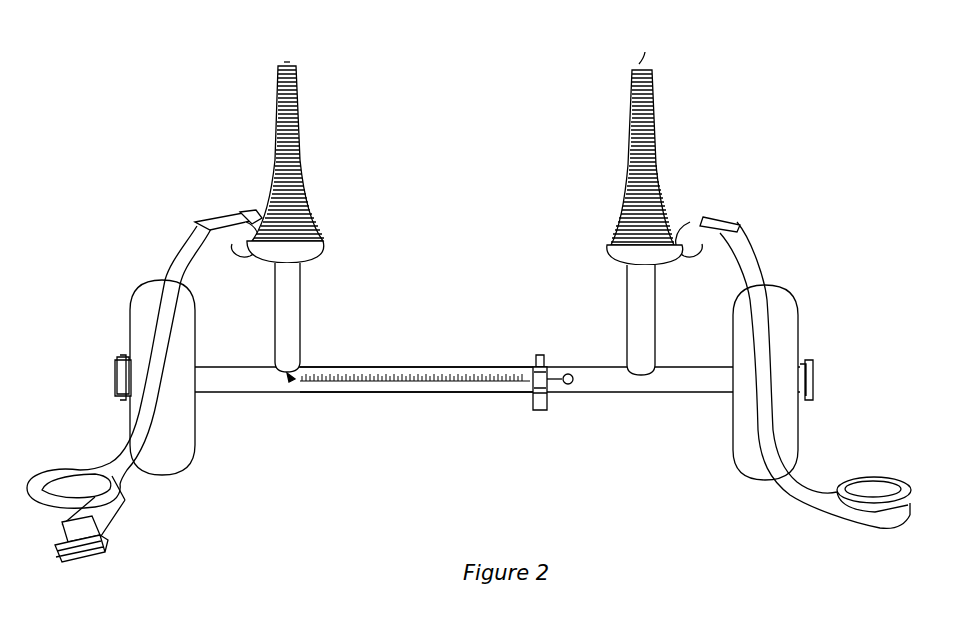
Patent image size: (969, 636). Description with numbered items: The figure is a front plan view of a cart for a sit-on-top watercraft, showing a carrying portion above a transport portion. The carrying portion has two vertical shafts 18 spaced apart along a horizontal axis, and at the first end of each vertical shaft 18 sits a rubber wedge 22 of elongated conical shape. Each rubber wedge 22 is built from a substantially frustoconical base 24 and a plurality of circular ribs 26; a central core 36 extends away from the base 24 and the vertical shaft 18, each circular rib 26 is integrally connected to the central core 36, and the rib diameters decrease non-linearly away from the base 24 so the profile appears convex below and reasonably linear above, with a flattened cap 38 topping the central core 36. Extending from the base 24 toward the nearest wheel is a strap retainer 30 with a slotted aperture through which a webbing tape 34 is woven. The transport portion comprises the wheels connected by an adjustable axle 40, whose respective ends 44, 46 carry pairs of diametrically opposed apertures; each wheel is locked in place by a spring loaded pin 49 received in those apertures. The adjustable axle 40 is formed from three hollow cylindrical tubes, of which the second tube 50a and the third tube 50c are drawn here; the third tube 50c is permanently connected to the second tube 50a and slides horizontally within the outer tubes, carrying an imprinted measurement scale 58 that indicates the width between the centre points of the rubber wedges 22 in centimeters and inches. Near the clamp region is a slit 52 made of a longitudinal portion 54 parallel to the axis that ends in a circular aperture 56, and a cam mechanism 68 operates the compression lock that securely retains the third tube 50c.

The vertical shaft 18 is at (302, 314).
The rubber wedge 22 is at (309, 141).
The base 24 is at (325, 252).
The circular ribs 26 is at (299, 104).
The strap retainer 30 is at (240, 220).
The webbing tape 34 is at (128, 517).
The central core 36 is at (642, 68).
The flattened cap 38 is at (289, 62).
The adjustable axle 40 is at (291, 396).
The end 44 is at (113, 379).
The end 46 is at (812, 372).
The spring loaded pin 49 is at (120, 357).
The second cylindrical tube 50a is at (238, 367).
The third tube 50c is at (409, 367).
The slit 52 is at (541, 356).
The longitudinal portion 54 is at (556, 348).
The circular aperture 56 is at (527, 398).
The measurement scale 58 is at (421, 393).
The cam mechanism 68 is at (542, 396).